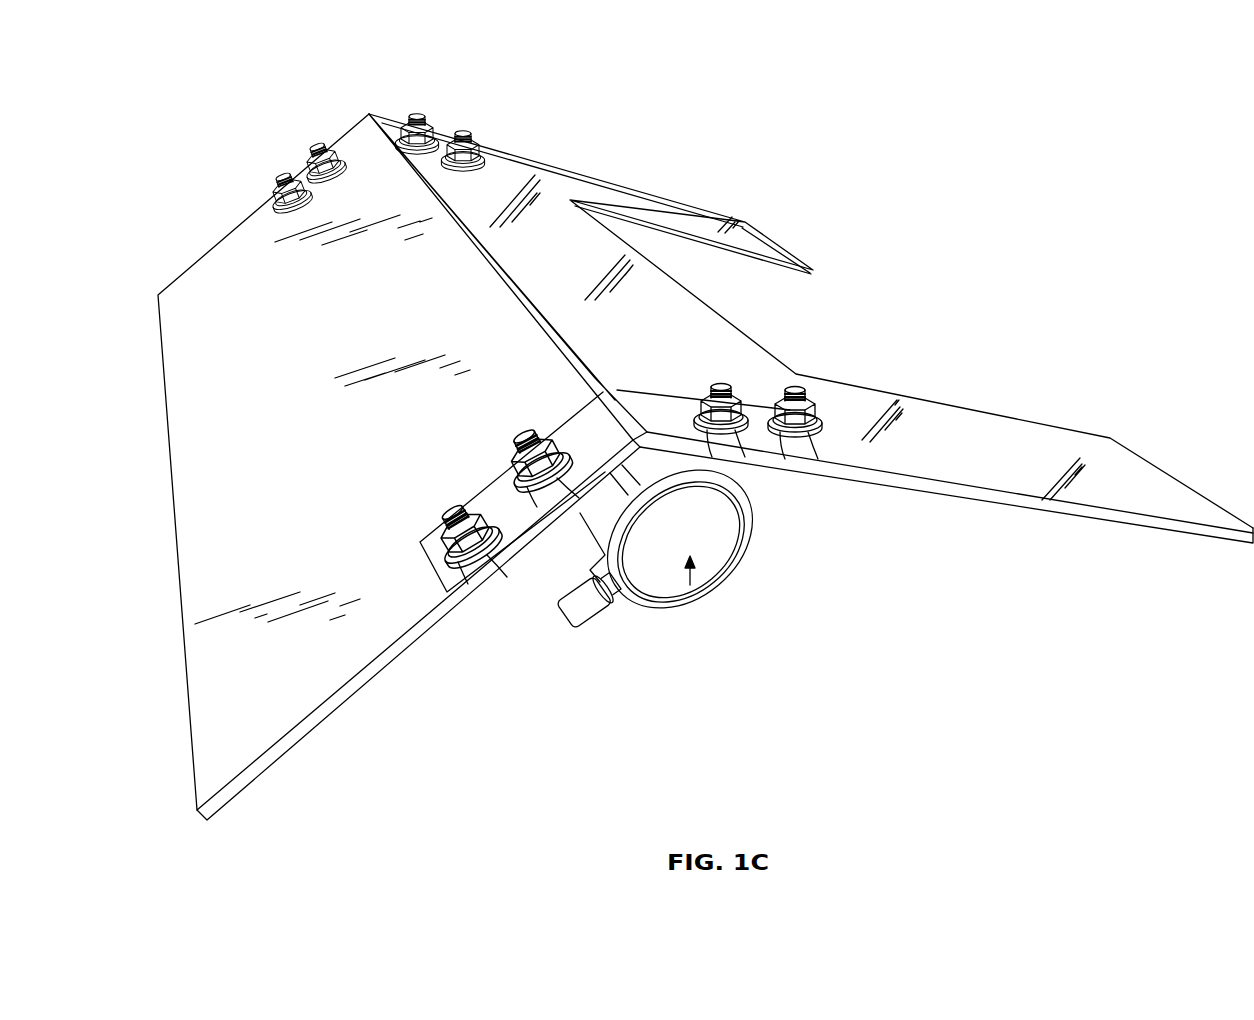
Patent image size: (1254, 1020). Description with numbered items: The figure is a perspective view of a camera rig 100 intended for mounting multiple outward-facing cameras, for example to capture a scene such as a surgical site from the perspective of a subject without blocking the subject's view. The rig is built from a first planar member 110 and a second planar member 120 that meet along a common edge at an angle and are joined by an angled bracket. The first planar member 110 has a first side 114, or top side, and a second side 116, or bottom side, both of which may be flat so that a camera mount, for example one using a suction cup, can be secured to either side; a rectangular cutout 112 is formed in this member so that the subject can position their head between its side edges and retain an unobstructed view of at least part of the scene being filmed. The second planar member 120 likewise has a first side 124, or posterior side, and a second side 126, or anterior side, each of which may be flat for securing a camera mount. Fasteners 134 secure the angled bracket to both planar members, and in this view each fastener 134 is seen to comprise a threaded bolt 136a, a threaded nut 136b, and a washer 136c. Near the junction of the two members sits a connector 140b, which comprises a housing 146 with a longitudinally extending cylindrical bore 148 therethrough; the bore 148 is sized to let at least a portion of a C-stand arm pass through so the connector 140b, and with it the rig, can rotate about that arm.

The camera rig 100 is at (1000, 662).
The first planar member 110 is at (1046, 440).
The rectangular cutout 112 is at (988, 226).
The first side 114 is at (1078, 520).
The second side 116 is at (975, 438).
The second planar member 120 is at (325, 670).
The first side 124 is at (415, 650).
The second side 126 is at (192, 500).
The fastener 134 is at (286, 182).
The threaded bolt 136a is at (732, 392).
The threaded nut 136b is at (707, 408).
The washer 136c is at (738, 432).
The connector 140b is at (648, 594).
The housing 146 is at (720, 570).
The cylindrical bore 148 is at (692, 578).